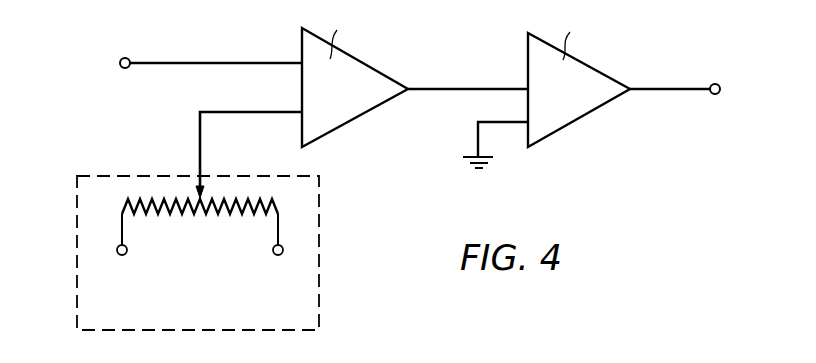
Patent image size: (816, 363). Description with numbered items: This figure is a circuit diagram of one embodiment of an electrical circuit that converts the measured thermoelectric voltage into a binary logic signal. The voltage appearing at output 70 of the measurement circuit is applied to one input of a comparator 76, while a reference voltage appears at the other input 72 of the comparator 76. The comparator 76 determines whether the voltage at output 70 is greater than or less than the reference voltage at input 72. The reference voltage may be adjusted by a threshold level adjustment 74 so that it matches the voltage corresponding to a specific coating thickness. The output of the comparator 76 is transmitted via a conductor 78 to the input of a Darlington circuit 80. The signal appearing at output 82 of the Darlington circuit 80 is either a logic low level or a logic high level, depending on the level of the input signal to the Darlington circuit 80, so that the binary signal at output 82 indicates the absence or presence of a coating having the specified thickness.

The output 70 is at (120, 63).
The input 72 is at (203, 109).
The threshold level adjustment 74 is at (319, 207).
The comparator 76 is at (355, 108).
The conductor 78 is at (469, 87).
The Darlington circuit 80 is at (577, 115).
The output 82 is at (717, 83).